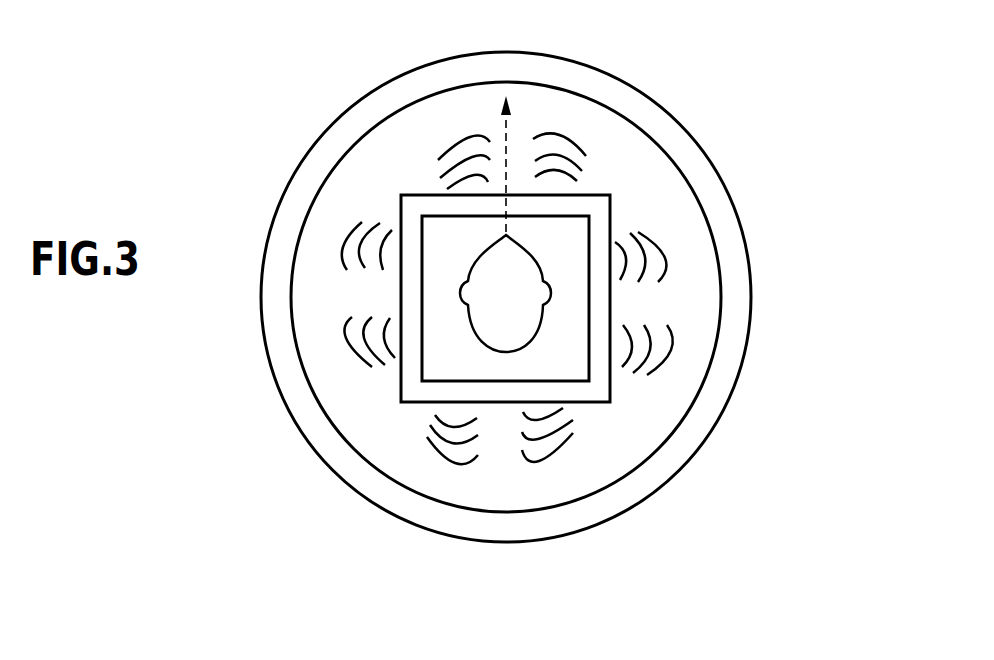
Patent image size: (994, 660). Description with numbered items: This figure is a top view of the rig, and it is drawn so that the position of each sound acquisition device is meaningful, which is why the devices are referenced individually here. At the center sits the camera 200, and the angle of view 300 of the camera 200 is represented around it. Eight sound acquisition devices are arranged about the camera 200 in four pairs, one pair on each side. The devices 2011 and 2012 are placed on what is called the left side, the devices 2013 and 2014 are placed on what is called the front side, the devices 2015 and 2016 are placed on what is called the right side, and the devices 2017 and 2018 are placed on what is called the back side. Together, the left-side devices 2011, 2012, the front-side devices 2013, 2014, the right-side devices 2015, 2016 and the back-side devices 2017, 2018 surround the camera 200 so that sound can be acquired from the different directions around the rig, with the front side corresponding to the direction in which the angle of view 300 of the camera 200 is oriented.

The angle of view 300 is at (317, 155).
The camera 200 is at (595, 388).
The sound acquisition device 2011 is at (348, 350).
The sound acquisition device 2012 is at (337, 253).
The sound acquisition device 2013 is at (463, 130).
The sound acquisition device 2014 is at (557, 130).
The sound acquisition device 2015 is at (673, 258).
The sound acquisition device 2016 is at (673, 330).
The sound acquisition device 2017 is at (552, 462).
The sound acquisition device 2018 is at (453, 467).